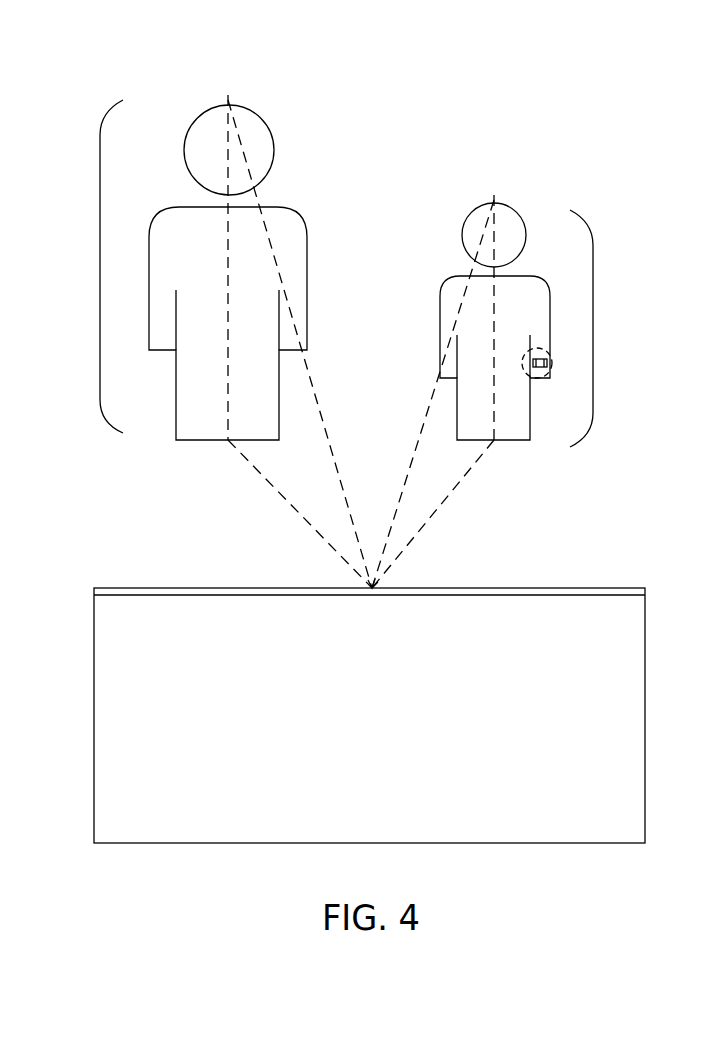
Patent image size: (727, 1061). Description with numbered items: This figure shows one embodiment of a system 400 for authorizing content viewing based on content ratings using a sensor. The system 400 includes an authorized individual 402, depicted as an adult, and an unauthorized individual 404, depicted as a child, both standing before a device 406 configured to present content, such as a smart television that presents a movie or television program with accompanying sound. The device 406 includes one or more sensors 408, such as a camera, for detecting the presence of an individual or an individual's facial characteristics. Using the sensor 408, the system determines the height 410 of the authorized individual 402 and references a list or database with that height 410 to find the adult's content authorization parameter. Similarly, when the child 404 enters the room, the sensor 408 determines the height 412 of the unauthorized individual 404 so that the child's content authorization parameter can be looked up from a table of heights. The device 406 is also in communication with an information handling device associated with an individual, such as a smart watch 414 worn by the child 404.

The system 400 is at (95, 56).
The authorized individual 402 is at (184, 146).
The unauthorized individual 404 is at (462, 237).
The device 406 is at (94, 593).
The sensor 408 is at (373, 587).
The height of the adult individual 410 is at (100, 267).
The height of the child 412 is at (593, 330).
The smart watch 414 is at (549, 362).